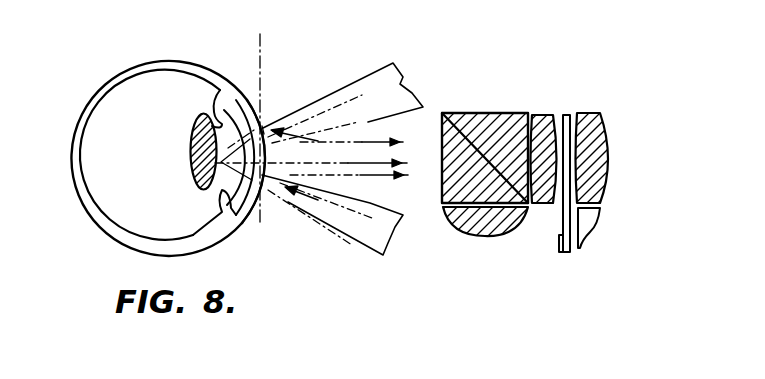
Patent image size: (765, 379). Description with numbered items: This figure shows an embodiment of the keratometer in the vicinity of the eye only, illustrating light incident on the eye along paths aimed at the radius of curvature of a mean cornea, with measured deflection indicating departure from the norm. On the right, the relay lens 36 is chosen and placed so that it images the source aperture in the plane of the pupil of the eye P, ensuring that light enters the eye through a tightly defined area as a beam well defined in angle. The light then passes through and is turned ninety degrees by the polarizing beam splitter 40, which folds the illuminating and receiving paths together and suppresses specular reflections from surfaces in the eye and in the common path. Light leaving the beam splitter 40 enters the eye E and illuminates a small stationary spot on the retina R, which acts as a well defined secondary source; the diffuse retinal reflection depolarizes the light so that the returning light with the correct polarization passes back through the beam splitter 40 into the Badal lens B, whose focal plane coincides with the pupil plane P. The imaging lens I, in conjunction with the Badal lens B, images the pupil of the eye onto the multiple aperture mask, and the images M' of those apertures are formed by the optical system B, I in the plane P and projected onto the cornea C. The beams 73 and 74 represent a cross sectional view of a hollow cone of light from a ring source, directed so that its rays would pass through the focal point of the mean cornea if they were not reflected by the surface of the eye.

The eye E is at (170, 62).
The retina R is at (84, 136).
The cornea C is at (236, 212).
The pupil plane of the eye P is at (260, 42).
The images of the apertures of the mask M' is at (287, 105).
The beam 73 is at (398, 70).
The beam 74 is at (362, 243).
The polarizing beam splitter 40 is at (481, 113).
The relay lens 36 is at (480, 232).
The Badal lens B is at (545, 115).
The imaging lens I is at (599, 113).